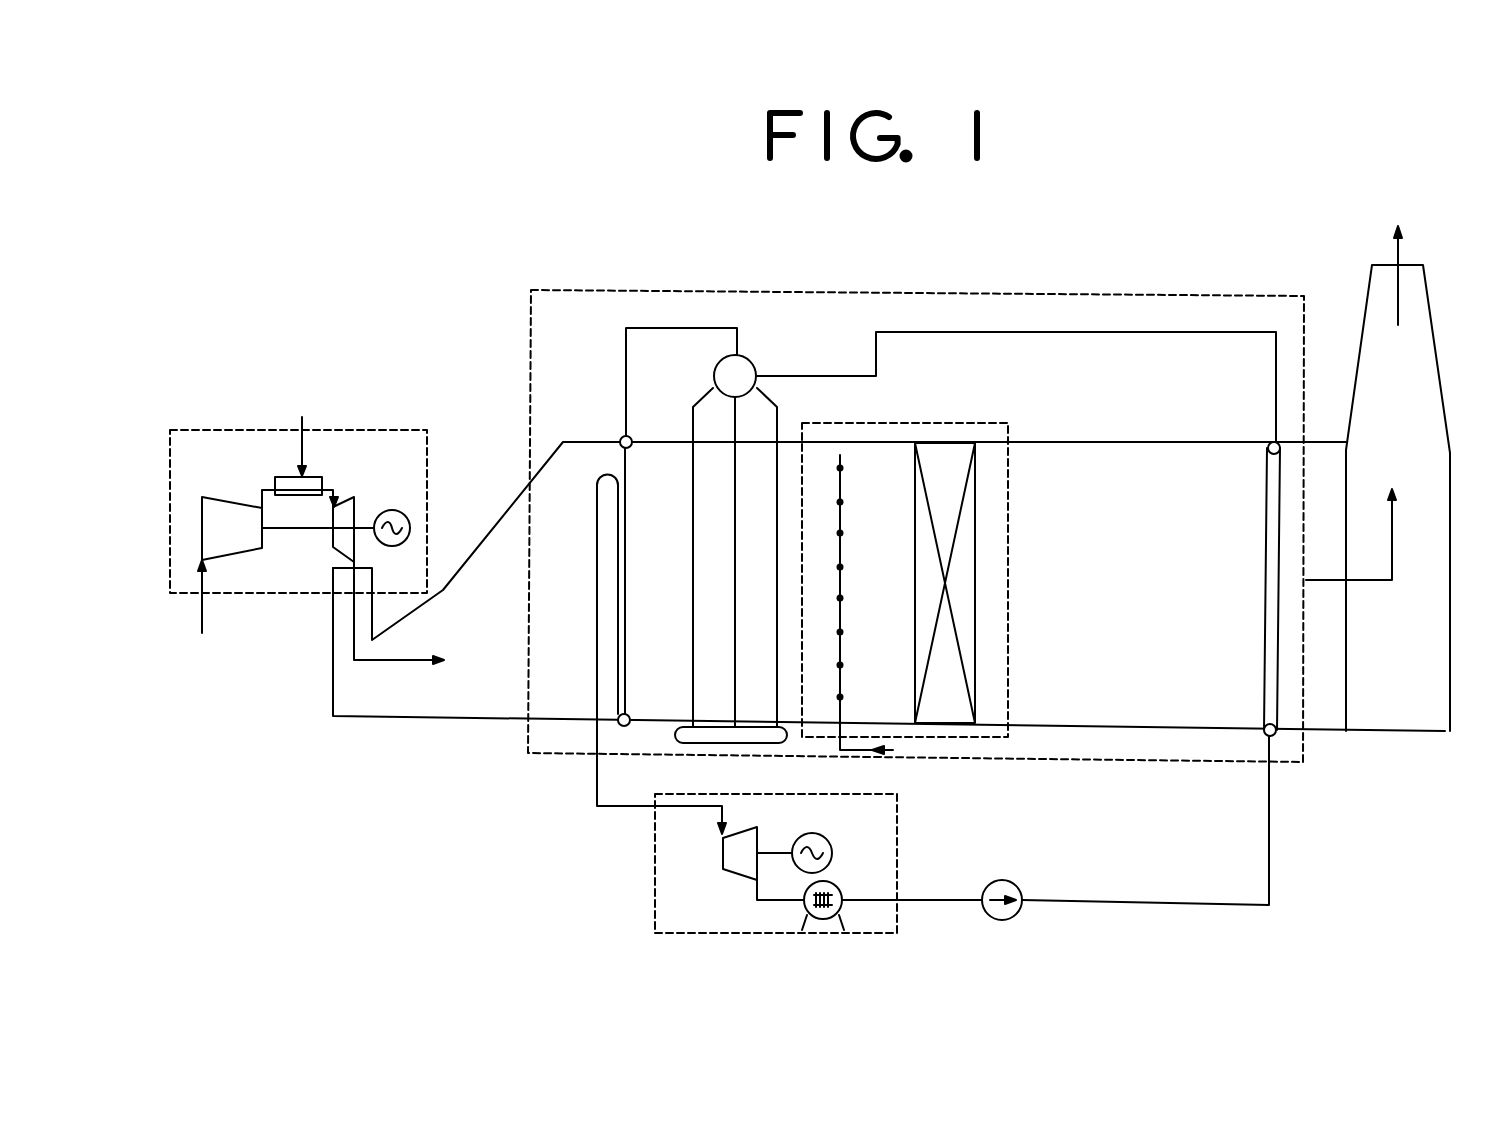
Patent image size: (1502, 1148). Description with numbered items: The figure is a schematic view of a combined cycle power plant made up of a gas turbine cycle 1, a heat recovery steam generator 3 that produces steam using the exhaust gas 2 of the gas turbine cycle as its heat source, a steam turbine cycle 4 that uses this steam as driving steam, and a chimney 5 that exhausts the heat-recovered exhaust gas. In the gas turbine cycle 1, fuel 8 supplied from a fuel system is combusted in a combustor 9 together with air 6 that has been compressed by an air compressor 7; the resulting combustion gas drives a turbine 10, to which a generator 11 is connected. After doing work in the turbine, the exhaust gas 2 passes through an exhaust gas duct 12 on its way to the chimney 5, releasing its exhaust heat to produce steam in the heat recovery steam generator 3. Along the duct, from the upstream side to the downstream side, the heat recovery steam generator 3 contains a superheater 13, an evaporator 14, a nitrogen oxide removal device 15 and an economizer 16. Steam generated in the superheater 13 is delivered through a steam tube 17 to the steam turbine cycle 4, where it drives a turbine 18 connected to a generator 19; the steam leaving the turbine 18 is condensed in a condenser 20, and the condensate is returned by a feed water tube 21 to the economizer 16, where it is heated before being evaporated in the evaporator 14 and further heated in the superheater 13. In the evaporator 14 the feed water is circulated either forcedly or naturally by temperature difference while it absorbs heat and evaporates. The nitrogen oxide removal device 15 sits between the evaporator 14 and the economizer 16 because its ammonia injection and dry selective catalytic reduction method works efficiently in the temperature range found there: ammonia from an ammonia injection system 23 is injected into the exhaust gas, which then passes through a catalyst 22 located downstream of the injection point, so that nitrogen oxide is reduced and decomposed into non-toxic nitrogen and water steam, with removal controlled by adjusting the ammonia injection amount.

The gas turbine cycle 1 is at (386, 430).
The exhaust gas 2 is at (408, 656).
The heat recovery steam generator 3 is at (817, 291).
The steam turbine cycle 4 is at (652, 880).
The chimney 5 is at (1437, 340).
The air 6 is at (202, 615).
The air compressor 7 is at (262, 535).
The fuel 8 is at (302, 417).
The combustor 9 is at (322, 477).
The turbine 10 is at (357, 500).
The generator 11 is at (410, 515).
The exhaust gas duct 12 is at (554, 723).
The superheater 13 is at (595, 603).
The evaporator 14 is at (693, 578).
The nitrogen oxide removal device 15 is at (948, 423).
The economizer 16 is at (1265, 520).
The steam tube 17 is at (595, 805).
The turbine 18 is at (730, 870).
The generator 19 is at (825, 838).
The condenser 20 is at (840, 886).
The feed water tube 21 is at (1270, 818).
The catalyst 22 is at (915, 530).
The ammonia injection system 23 is at (893, 750).